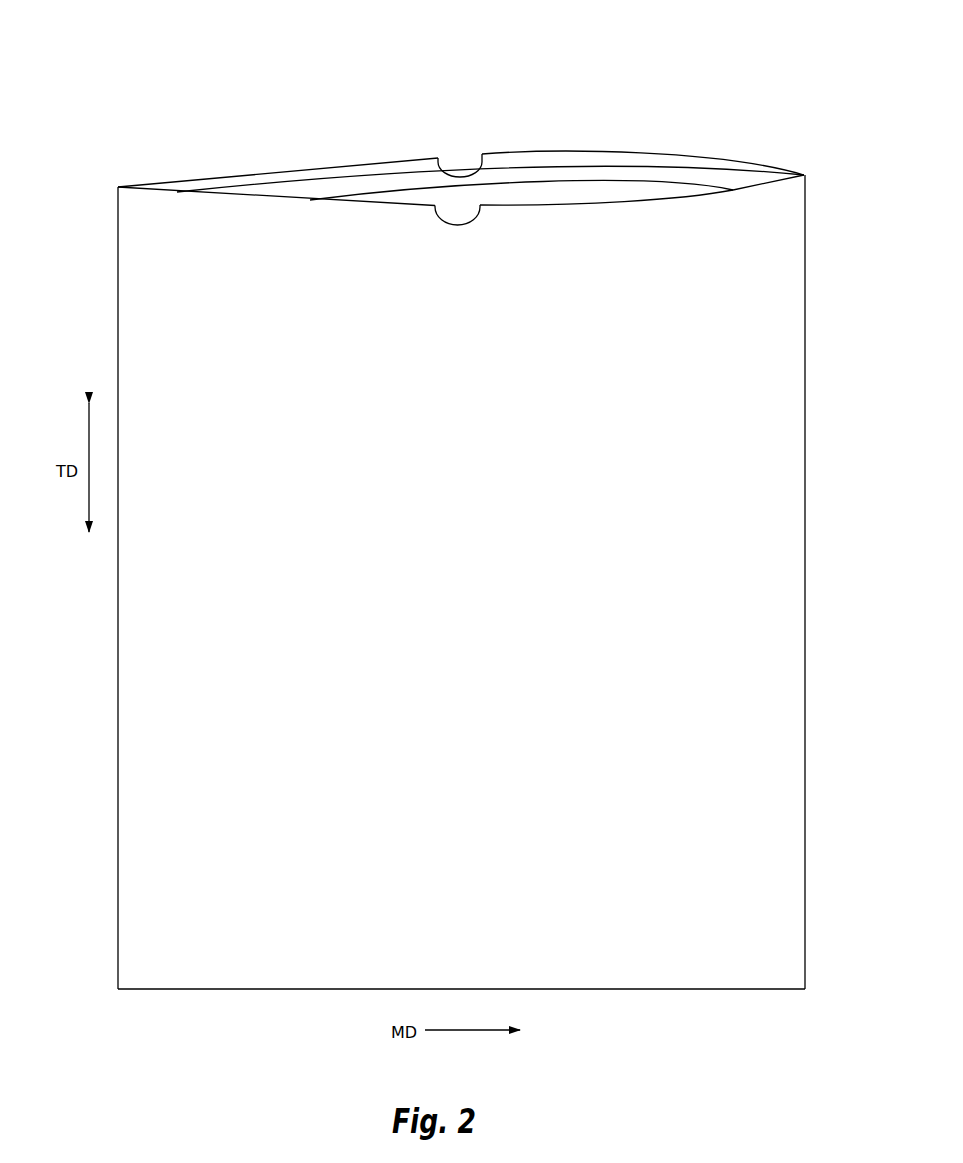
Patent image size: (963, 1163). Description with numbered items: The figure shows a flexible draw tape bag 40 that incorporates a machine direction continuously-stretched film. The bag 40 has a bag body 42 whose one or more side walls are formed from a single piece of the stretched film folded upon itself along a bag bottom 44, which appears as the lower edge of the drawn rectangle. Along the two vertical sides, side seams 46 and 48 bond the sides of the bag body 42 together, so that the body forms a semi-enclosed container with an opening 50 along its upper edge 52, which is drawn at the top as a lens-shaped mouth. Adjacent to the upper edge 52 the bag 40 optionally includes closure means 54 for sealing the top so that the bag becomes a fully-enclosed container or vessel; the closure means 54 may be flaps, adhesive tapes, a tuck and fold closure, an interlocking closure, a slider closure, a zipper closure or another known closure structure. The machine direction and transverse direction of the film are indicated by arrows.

The flexible draw tape bag 40 is at (120, 53).
The bag body 42 is at (818, 203).
The bag bottom 44 is at (740, 990).
The side seam 46 is at (807, 587).
The side seam 48 is at (117, 585).
The opening 50 is at (585, 200).
The upper edge 52 is at (375, 163).
The closure means 54 is at (463, 160).